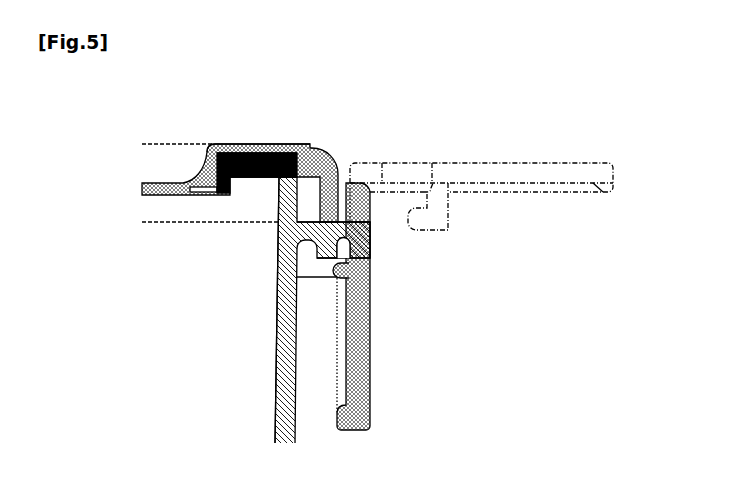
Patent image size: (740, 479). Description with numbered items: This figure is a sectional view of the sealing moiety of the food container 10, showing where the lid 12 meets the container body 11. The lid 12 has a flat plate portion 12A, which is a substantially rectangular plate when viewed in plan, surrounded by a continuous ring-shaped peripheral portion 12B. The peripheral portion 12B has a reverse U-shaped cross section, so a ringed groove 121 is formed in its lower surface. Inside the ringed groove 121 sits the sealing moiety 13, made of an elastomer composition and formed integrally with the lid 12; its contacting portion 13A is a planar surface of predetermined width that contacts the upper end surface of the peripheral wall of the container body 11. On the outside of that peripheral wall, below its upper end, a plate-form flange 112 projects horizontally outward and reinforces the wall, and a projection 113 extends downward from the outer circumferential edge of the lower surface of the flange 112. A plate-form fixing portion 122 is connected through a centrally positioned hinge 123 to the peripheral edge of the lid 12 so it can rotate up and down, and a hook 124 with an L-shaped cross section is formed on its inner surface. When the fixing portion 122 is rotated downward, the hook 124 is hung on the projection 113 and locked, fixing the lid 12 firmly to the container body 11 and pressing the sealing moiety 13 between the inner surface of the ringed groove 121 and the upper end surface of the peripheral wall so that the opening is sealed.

The food container 10 is at (433, 114).
The container body 11 is at (279, 377).
The flange 112 is at (372, 233).
The projection 113 is at (372, 263).
The lid 12 is at (323, 145).
The flat plate portion 12A is at (152, 186).
The peripheral portion 12B is at (213, 143).
The ringed groove 121 is at (257, 152).
The fixing portion 122 is at (373, 350).
The hinge 123 is at (340, 185).
The hook 124 is at (279, 258).
The sealing moiety 13 is at (221, 194).
The contacting portion 13A is at (257, 178).